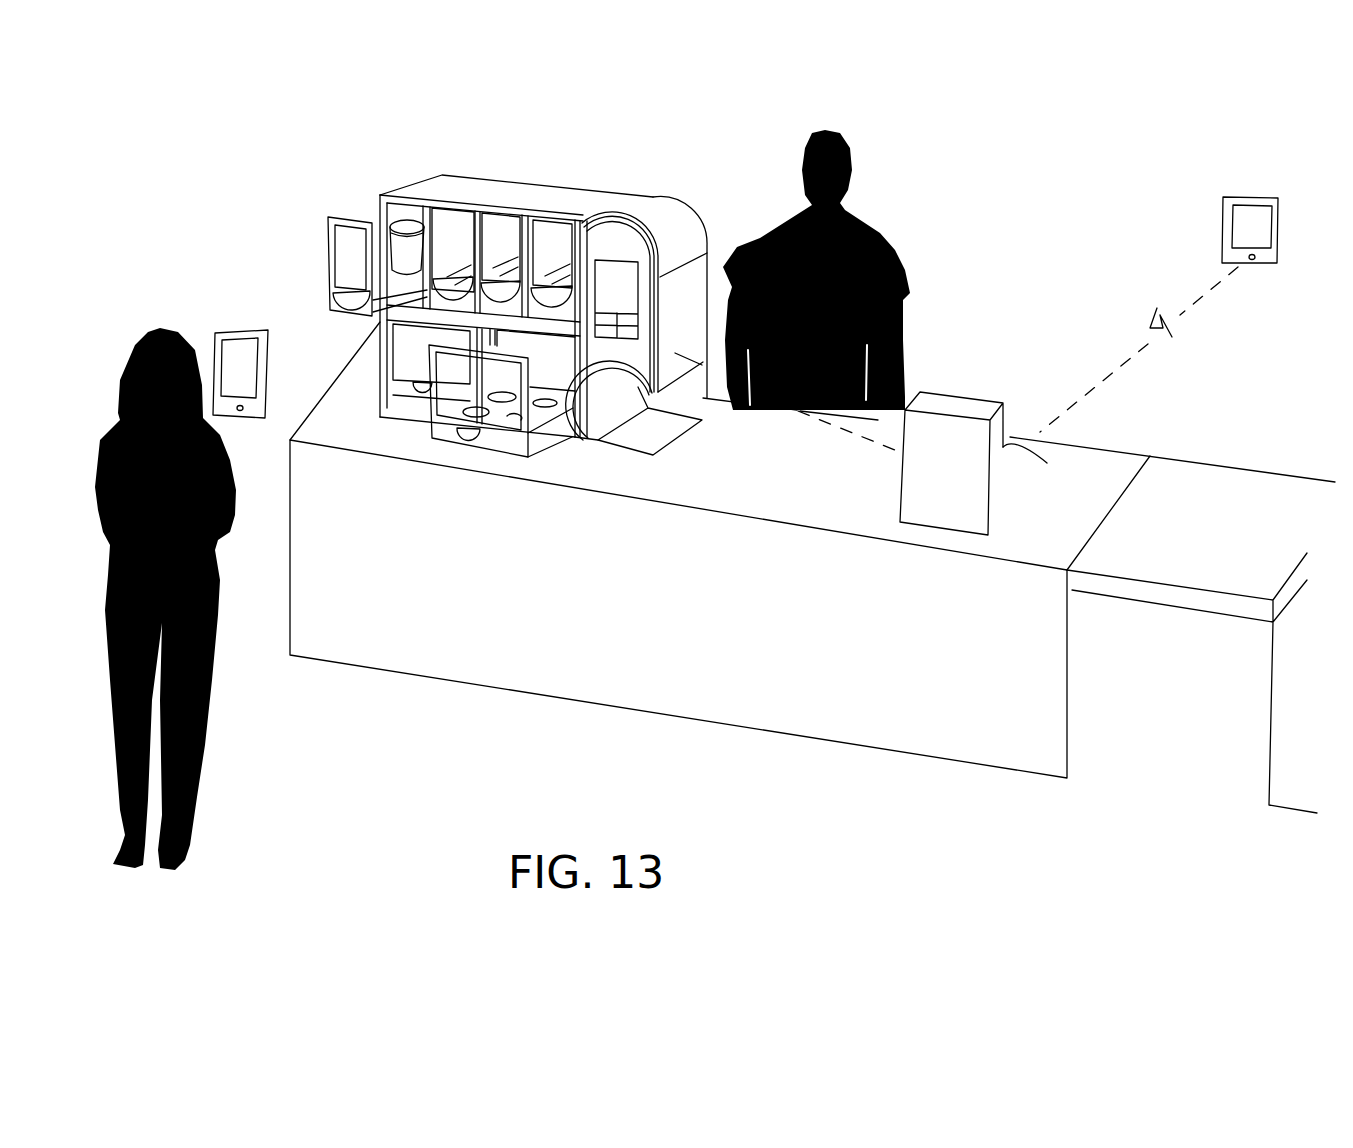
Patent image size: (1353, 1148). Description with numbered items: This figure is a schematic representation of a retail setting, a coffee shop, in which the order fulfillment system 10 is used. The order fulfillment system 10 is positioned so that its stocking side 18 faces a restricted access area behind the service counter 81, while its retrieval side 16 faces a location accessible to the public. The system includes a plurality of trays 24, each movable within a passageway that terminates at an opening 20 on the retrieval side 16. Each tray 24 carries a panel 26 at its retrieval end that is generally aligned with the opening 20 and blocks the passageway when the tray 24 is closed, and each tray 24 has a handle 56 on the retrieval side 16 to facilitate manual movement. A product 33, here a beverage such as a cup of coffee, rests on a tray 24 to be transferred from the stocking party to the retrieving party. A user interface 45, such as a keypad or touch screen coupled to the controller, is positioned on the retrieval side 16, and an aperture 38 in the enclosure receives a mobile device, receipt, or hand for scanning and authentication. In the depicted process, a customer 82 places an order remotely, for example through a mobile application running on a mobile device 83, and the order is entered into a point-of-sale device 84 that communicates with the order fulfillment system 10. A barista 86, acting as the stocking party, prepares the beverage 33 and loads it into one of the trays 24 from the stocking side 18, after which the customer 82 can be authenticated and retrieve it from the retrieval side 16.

The order fulfillment system 10 is at (602, 142).
The retrieval side 16 is at (428, 207).
The stocking side 18 is at (515, 180).
The opening 20 is at (572, 375).
The tray 24 is at (563, 300).
The panel 26 is at (545, 255).
The product 33 is at (405, 253).
The aperture 38 is at (704, 397).
The user interface 45 is at (625, 275).
The handle 56 is at (347, 300).
The service counter 81 is at (1095, 477).
The customer 82 is at (205, 760).
The mobile device 83 is at (215, 343).
The point-of-sale device 84 is at (960, 408).
The barista 86 is at (868, 222).